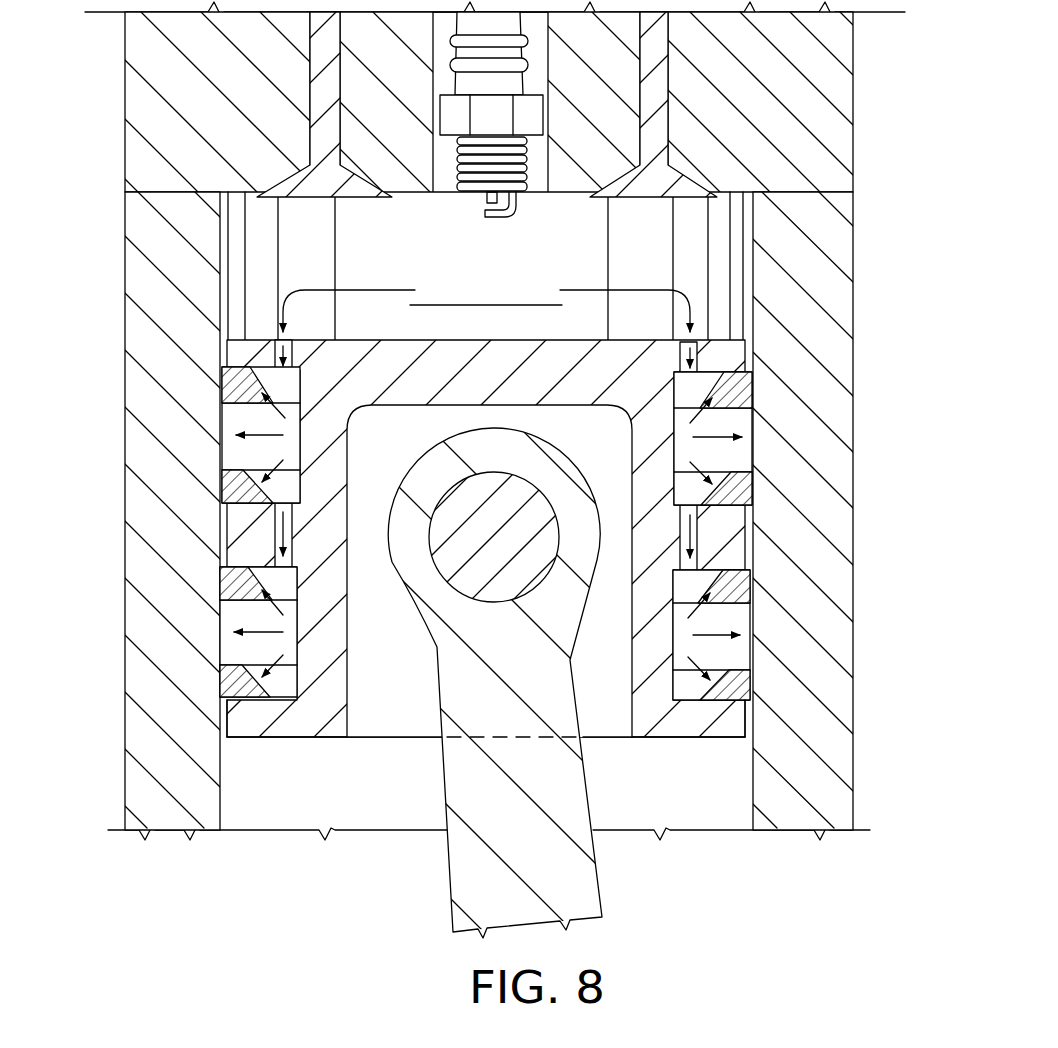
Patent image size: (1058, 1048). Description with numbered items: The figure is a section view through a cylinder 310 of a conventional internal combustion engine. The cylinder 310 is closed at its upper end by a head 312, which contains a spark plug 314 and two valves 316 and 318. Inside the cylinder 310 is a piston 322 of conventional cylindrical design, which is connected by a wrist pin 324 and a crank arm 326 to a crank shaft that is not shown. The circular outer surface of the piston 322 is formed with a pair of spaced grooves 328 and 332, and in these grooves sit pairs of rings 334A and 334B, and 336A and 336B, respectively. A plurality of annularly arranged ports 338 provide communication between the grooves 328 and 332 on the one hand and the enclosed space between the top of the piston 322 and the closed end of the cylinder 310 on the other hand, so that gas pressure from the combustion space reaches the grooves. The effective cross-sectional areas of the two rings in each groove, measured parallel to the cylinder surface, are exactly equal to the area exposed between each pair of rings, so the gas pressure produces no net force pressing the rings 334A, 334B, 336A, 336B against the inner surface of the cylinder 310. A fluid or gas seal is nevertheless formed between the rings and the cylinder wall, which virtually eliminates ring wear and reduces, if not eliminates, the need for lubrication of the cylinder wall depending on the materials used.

The cylinder 310 is at (125, 535).
The head 312 is at (125, 130).
The spark plug 314 is at (508, 218).
The valve 316 is at (322, 196).
The valve 318 is at (660, 197).
The piston 322 is at (315, 738).
The wrist pin 324 is at (440, 580).
The crank arm 326 is at (598, 888).
The groove 328 is at (270, 722).
The groove 332 is at (350, 343).
The ring 334A is at (220, 656).
The ring 334B is at (220, 612).
The ring 336A is at (222, 455).
The ring 336B is at (222, 410).
The port 338 is at (286, 340).